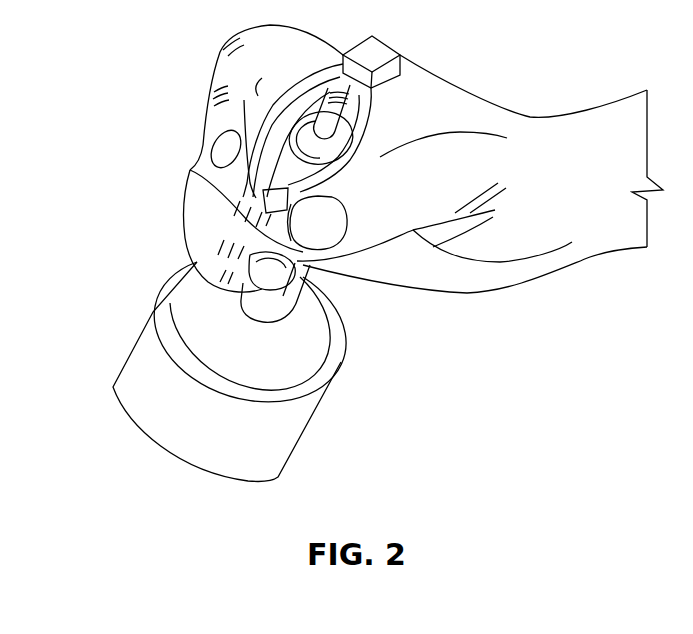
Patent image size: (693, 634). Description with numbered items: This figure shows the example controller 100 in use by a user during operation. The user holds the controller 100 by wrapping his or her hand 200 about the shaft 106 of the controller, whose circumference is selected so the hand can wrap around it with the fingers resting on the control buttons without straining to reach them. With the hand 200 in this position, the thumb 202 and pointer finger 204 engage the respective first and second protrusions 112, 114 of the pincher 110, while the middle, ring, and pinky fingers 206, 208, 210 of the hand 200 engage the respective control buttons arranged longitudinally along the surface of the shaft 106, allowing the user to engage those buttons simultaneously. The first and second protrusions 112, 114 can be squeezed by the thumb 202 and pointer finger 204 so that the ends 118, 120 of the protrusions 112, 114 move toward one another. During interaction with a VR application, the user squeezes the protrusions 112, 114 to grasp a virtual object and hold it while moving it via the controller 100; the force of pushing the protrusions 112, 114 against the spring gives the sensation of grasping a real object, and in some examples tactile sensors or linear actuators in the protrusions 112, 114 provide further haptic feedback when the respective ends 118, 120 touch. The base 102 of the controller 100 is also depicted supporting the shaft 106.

The controller 100 is at (137, 283).
The base 102 is at (305, 428).
The shaft 106 is at (308, 292).
The pincher 110 is at (393, 117).
The first protrusion 112 is at (380, 132).
The second protrusion 114 is at (310, 70).
The end of first protrusion 118 is at (283, 181).
The end of second protrusion 120 is at (205, 147).
The hand 200 is at (443, 70).
The thumb 202 is at (395, 200).
The pointer finger 204 is at (215, 74).
The middle finger 206 is at (192, 130).
The ring finger 208 is at (177, 193).
The pinky finger 210 is at (200, 238).